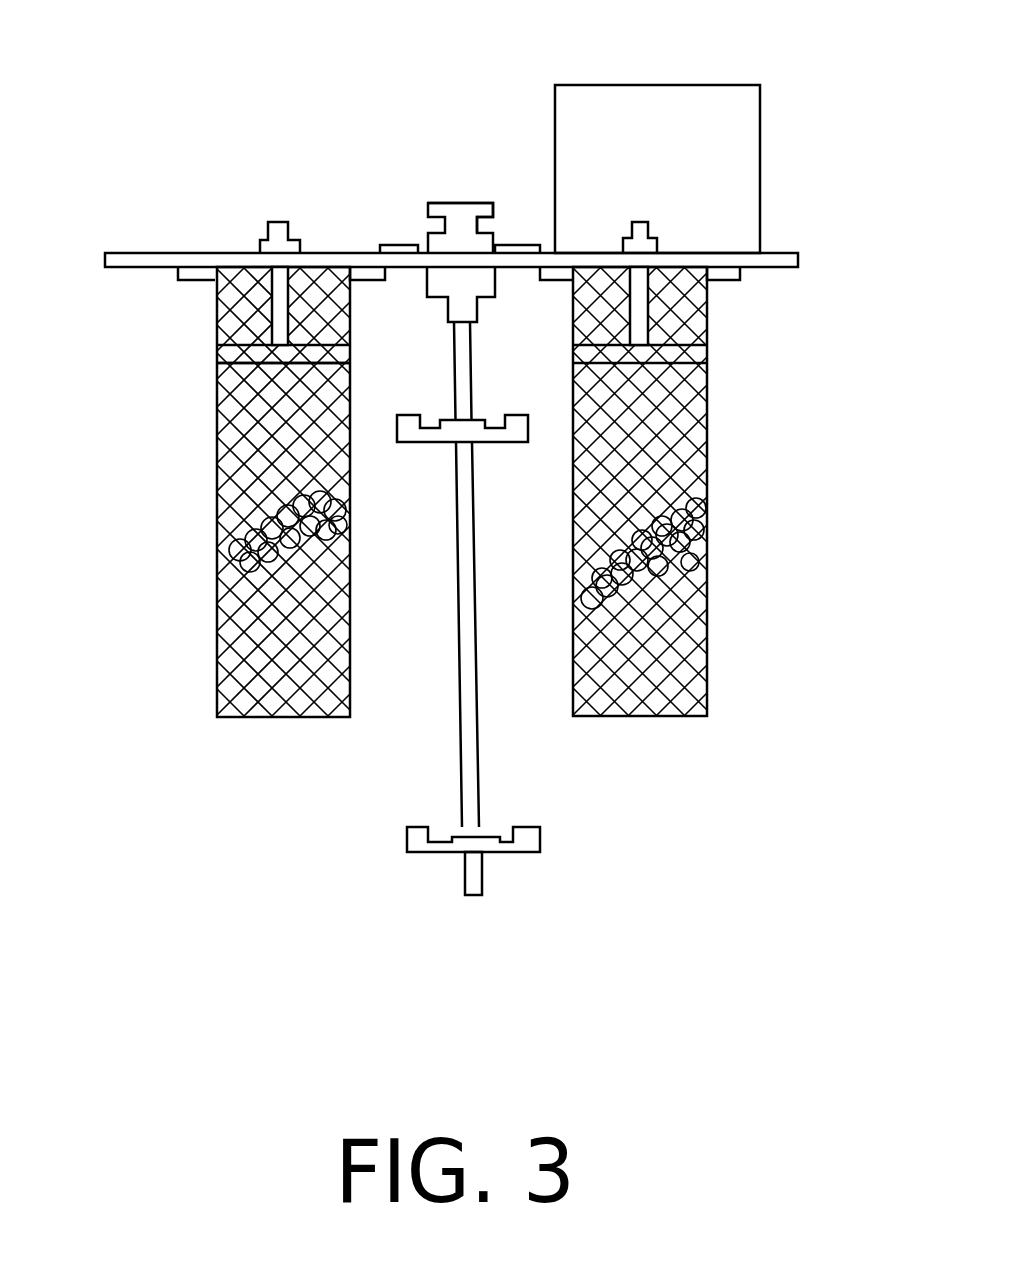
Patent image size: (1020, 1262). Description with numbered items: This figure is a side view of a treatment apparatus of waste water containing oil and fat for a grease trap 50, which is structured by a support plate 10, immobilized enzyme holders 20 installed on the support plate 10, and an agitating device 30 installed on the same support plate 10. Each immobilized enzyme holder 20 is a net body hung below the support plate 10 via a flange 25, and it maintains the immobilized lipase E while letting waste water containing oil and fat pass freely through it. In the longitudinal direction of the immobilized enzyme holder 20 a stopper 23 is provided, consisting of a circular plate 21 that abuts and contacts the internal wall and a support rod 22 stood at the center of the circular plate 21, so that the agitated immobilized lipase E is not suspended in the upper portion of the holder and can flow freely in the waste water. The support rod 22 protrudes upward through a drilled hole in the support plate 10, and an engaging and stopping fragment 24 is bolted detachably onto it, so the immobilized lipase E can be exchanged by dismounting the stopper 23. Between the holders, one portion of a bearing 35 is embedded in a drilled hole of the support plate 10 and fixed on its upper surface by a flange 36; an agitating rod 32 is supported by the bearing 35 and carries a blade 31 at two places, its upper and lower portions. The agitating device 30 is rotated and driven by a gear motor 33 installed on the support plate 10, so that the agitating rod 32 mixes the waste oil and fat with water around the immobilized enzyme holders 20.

The support plate 10 is at (145, 262).
The immobilized enzyme holder 20 is at (217, 655).
The circular plate 21 is at (333, 362).
The support rod 22 is at (282, 313).
The stopper 23 is at (217, 362).
The engaging and stopping fragment 24 is at (262, 245).
The flange 25 is at (177, 273).
The agitating device 30 is at (437, 203).
The blade 31 is at (518, 428).
The agitating rod 32 is at (473, 677).
The motor 33 is at (727, 152).
The bearing 35 is at (457, 215).
The flange 36 is at (395, 243).
The treatment apparatus of waste water containing oil and fat for a grease trap 50 is at (464, 476).
The immobilized lipase E is at (215, 535).